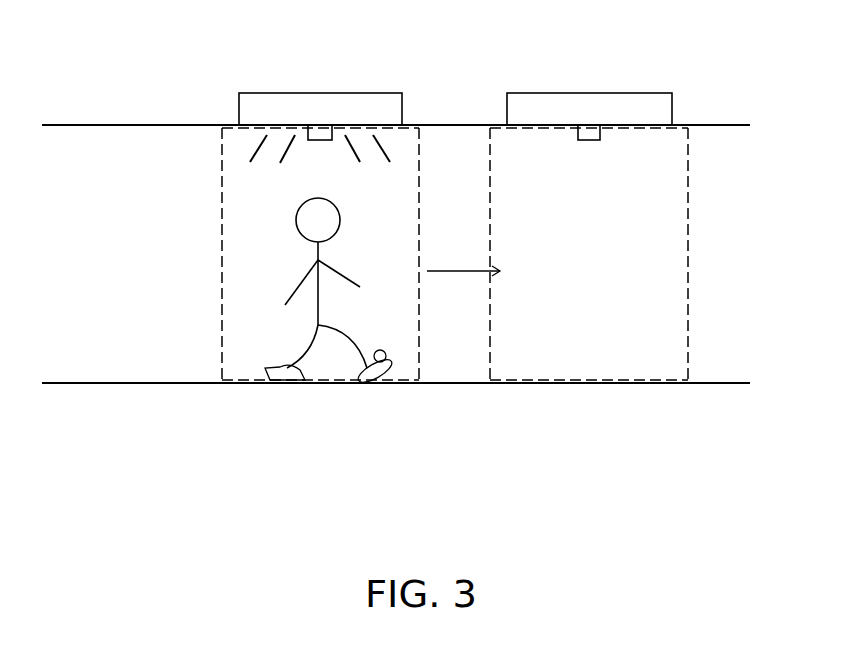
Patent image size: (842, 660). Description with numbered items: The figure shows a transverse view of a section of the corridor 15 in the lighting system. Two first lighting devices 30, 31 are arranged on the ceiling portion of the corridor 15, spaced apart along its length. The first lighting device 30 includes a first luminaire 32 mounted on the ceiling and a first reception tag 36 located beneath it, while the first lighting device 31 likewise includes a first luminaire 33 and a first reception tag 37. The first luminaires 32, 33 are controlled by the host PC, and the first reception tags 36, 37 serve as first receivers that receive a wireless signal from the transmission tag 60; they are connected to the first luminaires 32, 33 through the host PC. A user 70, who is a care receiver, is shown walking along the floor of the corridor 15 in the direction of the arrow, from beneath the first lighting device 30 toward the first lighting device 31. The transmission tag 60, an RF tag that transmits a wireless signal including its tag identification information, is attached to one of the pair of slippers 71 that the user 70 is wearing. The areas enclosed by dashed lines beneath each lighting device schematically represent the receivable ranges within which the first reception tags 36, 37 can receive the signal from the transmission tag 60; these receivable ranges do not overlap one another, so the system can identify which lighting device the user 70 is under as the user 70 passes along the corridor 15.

The corridor 15 is at (547, 380).
The first lighting device 30 is at (320, 104).
The first lighting device 31 is at (589, 104).
The first luminaire 32 is at (268, 93).
The first luminaire 33 is at (535, 93).
The first reception tag 36 is at (318, 142).
The first reception tag 37 is at (587, 142).
The transmission tag 60 is at (382, 350).
The user 70 is at (337, 333).
The shoe 71 is at (387, 384).